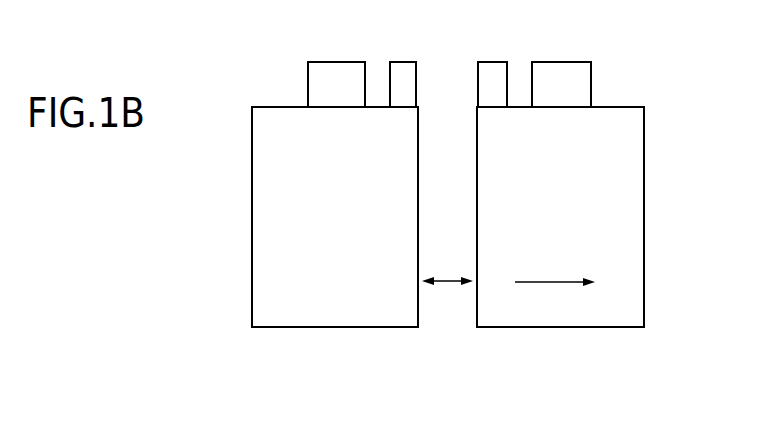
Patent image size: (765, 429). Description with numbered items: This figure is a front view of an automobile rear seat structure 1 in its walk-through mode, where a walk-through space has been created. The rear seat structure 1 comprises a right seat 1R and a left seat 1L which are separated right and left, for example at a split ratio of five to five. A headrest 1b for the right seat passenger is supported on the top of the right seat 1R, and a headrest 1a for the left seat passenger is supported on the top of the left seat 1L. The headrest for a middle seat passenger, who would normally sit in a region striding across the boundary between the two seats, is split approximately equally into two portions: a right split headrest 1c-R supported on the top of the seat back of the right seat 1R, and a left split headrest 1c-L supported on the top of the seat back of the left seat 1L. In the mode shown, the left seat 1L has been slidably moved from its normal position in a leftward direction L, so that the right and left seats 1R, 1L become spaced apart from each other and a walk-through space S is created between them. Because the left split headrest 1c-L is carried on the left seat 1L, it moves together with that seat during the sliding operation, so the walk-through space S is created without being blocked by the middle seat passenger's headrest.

The rear seat structure 1 is at (446, 169).
The right seat 1R is at (272, 253).
The left seat 1L is at (632, 262).
The left seat passenger's headrest 1a is at (563, 75).
The right seat passenger's headrest 1b is at (332, 75).
The right split headrest 1c-R is at (403, 80).
The left split headrest 1c-L is at (493, 80).
The walk-through space S is at (450, 285).
The leftward direction L is at (555, 285).